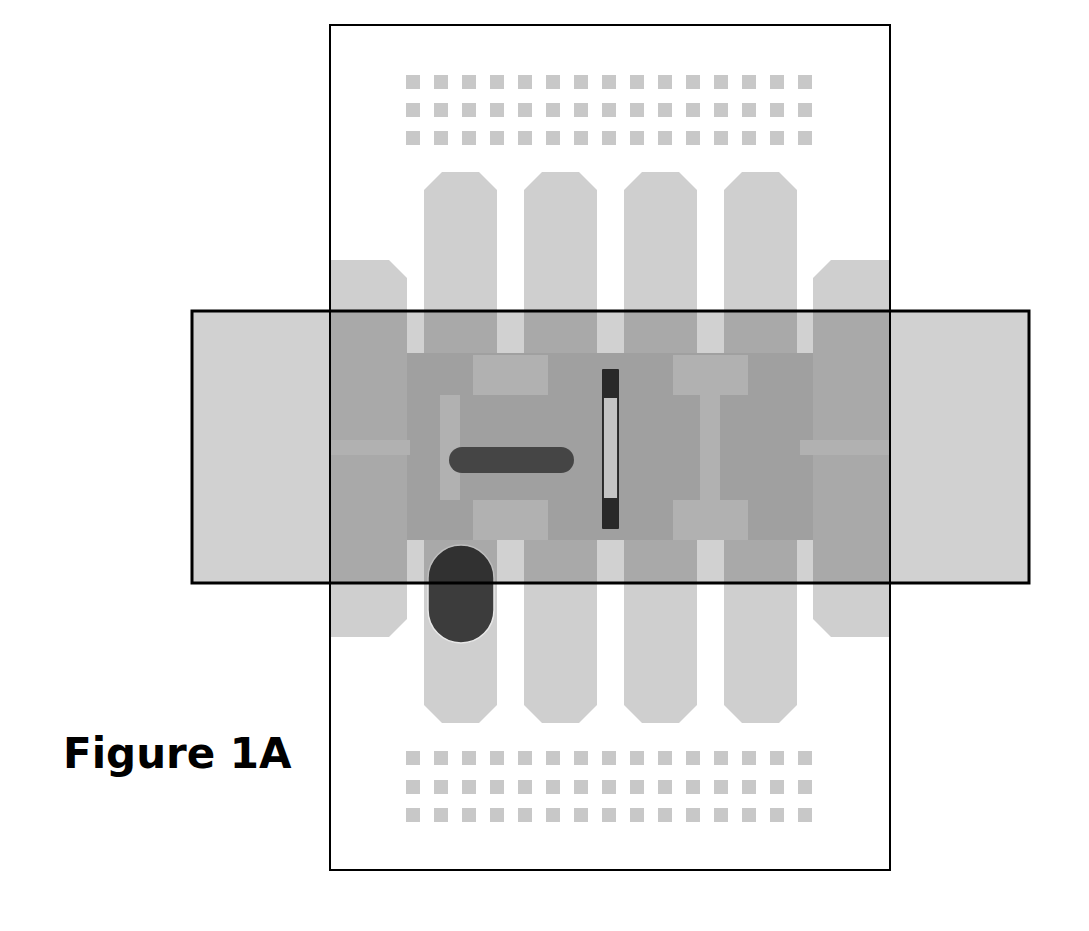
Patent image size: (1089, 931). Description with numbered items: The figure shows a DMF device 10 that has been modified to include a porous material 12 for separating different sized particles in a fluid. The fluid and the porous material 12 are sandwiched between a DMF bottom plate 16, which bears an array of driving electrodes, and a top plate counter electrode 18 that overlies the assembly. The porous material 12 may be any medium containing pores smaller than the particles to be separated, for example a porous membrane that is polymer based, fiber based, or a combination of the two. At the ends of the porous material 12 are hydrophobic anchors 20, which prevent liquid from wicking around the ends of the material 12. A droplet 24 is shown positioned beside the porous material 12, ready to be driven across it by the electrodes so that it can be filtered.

The DMF device 10 is at (962, 133).
The porous material 12 is at (574, 426).
The DMF bottom plate 16 is at (319, 114).
The top plate counter electrode 18 is at (937, 580).
The hydrophobic anchors 20 is at (643, 493).
The droplet 24 is at (414, 473).